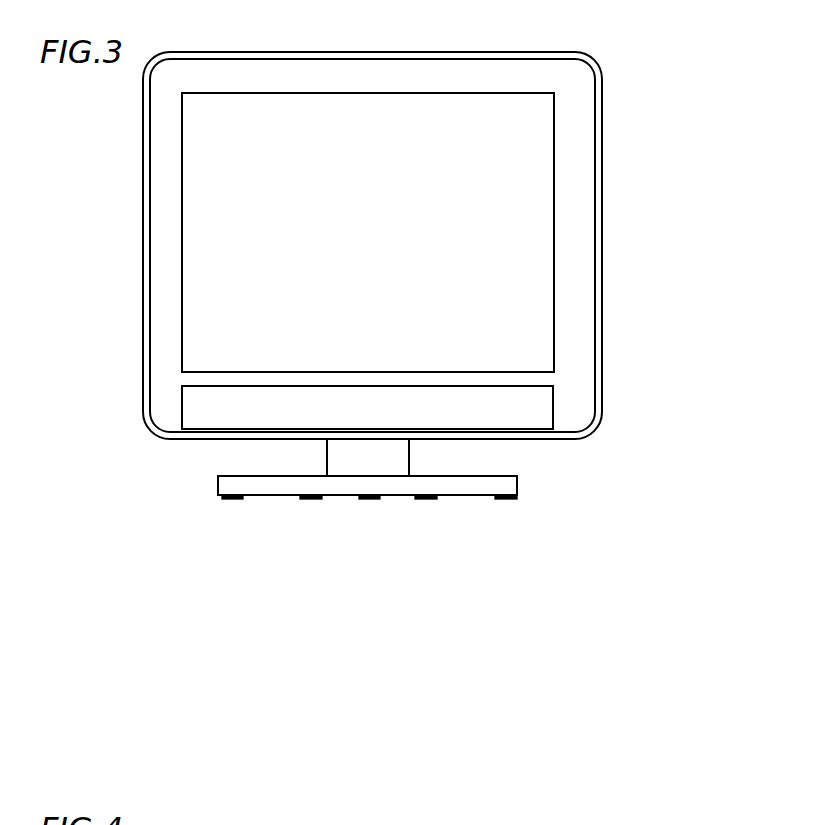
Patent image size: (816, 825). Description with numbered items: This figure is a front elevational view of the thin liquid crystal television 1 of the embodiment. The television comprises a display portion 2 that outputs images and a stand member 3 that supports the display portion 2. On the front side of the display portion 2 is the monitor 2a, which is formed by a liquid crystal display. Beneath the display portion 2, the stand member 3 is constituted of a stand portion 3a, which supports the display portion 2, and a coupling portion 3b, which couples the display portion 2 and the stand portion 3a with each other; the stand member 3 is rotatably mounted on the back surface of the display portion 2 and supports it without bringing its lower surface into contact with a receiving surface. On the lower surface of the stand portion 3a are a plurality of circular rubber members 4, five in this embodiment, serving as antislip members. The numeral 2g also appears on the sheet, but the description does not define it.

In FIG. 3, the thin liquid crystal television 1 is at (667, 128).
In FIG. 4, the thin liquid crystal television 1 is at (716, 817).
In FIG. 3, the display portion 2 is at (600, 246).
In FIG. 3, the monitor 2a is at (547, 330).
In FIG. 3, the stand member 3 is at (209, 483).
In FIG. 3, the stand portion 3a is at (517, 490).
In FIG. 3, the coupling portion 3b is at (409, 463).
In FIG. 3, the rubber members 4 is at (233, 499).
In FIG. 4, the display body part 2g is at (363, 824).